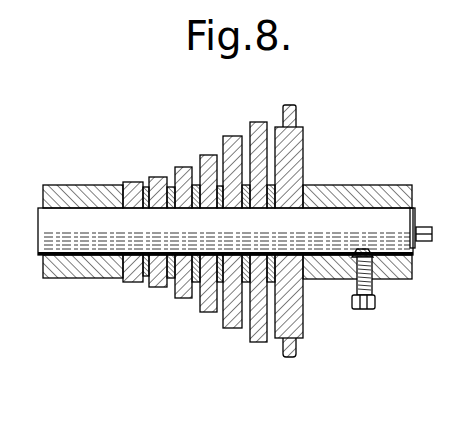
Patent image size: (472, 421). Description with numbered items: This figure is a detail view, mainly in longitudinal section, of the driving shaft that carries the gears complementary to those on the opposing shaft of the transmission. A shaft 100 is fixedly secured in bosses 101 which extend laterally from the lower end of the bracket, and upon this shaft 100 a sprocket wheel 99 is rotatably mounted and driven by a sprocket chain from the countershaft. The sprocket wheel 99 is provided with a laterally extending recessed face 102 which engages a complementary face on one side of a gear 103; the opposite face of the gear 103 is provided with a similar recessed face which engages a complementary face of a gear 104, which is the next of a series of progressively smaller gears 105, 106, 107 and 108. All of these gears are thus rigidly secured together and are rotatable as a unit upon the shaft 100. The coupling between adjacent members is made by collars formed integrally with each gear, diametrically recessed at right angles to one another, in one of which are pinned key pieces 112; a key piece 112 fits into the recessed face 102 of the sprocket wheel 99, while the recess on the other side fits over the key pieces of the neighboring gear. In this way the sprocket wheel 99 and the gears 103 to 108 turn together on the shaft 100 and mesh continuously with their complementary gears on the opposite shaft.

The sprocket wheel 99 is at (300, 162).
The shaft 100 is at (335, 215).
The bosses 101 is at (92, 278).
The recessed face 102 is at (282, 343).
The gear 103 is at (259, 343).
The gear 104 is at (231, 325).
The gear 105 is at (203, 311).
The gear 106 is at (177, 297).
The gear 107 is at (152, 288).
The gear 108 is at (134, 283).
The key pieces 112 is at (270, 180).